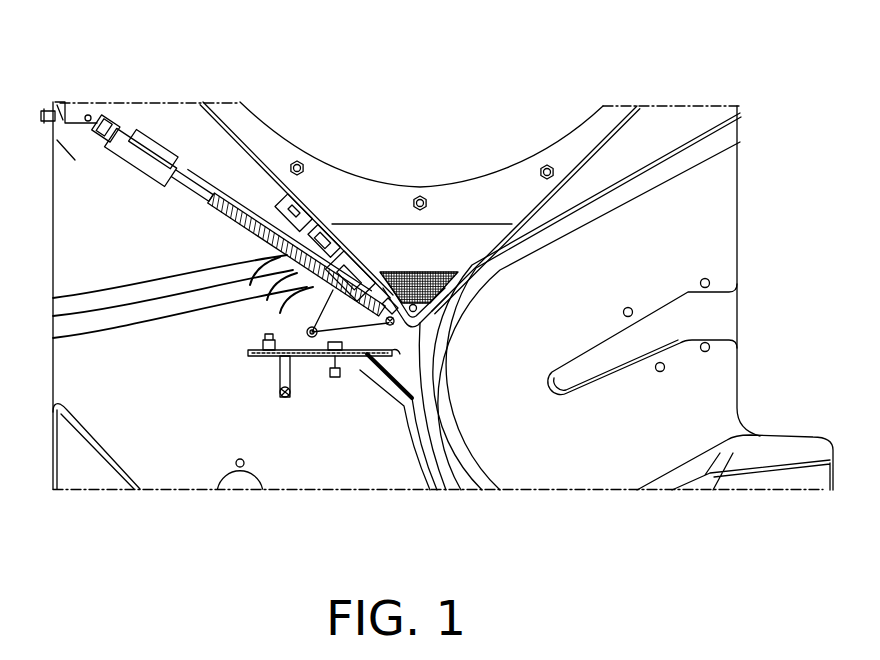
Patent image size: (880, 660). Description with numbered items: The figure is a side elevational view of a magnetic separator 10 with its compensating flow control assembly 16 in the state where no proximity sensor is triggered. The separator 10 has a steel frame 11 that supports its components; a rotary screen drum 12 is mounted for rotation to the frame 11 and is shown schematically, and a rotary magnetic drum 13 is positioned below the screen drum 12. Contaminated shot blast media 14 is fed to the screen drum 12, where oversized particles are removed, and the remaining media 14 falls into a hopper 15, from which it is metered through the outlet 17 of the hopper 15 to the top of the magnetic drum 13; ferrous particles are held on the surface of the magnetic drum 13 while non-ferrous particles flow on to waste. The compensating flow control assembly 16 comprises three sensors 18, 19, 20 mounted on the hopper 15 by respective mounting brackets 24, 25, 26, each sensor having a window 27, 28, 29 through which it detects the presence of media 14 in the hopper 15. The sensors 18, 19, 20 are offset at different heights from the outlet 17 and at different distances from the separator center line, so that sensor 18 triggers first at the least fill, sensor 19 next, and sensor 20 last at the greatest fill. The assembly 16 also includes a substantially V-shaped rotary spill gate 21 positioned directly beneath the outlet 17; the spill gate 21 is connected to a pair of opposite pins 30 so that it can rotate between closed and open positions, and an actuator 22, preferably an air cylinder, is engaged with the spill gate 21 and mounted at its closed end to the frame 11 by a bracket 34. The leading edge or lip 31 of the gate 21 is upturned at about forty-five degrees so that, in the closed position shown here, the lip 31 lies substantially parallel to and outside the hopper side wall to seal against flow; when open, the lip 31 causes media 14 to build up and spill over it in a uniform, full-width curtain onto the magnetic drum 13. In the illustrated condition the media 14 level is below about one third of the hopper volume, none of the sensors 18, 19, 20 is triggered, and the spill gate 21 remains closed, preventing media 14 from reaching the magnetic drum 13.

The magnetic separator 10 is at (318, 72).
The frame 11 is at (323, 463).
The rotary screen drum 12 is at (530, 160).
The rotary magnetic drum 13 is at (453, 450).
The contaminated shot blast media 14 is at (462, 278).
The hopper 15 is at (593, 142).
The compensating flow control assembly 16 is at (196, 234).
The outlet 17 is at (440, 290).
The sensor 18 is at (53, 338).
The sensor 19 is at (53, 316).
The sensor 20 is at (53, 298).
The rotary spill gate 21 is at (415, 325).
The actuator 22 is at (167, 187).
The mounting bracket 24 is at (443, 272).
The mounting bracket 25 is at (330, 245).
The mounting bracket 26 is at (292, 212).
The window 27 is at (362, 252).
The window 28 is at (313, 238).
The window 29 is at (298, 212).
The pins 30 is at (387, 325).
The lip 31 is at (430, 318).
The bracket 34 is at (80, 108).